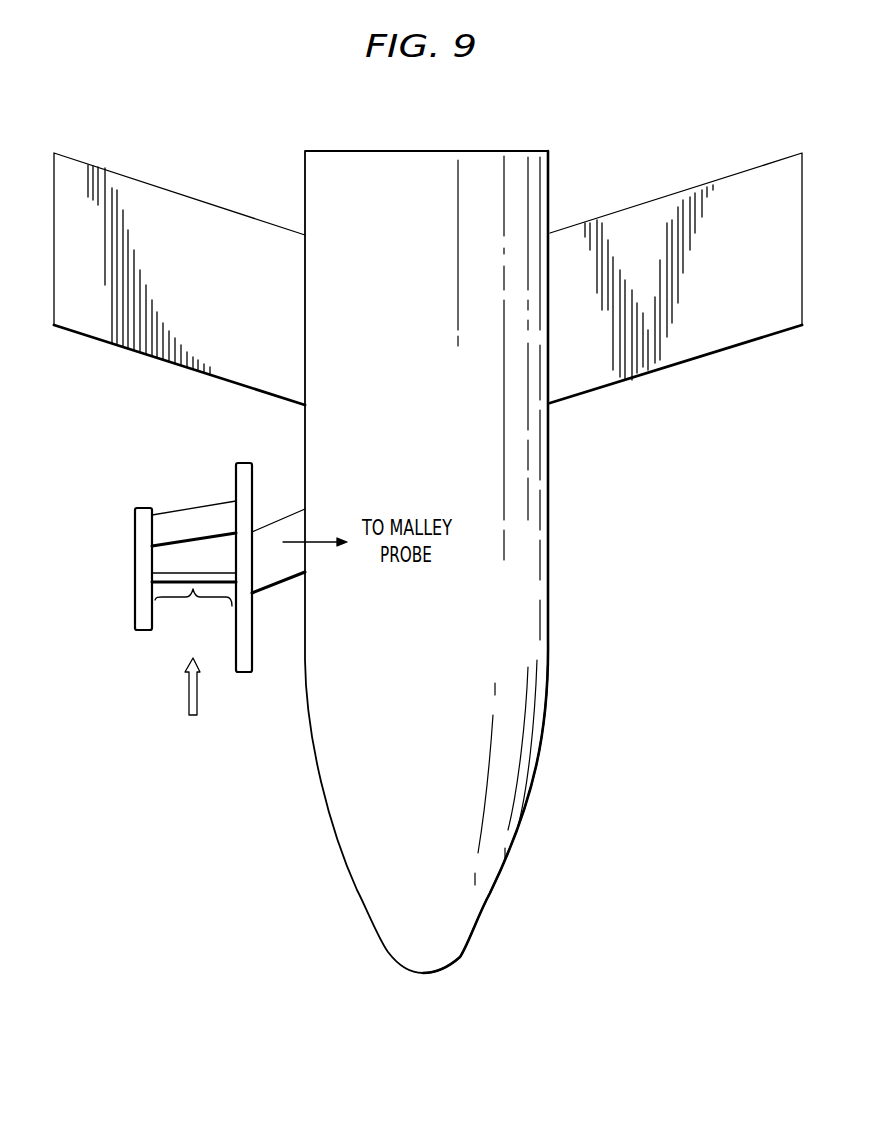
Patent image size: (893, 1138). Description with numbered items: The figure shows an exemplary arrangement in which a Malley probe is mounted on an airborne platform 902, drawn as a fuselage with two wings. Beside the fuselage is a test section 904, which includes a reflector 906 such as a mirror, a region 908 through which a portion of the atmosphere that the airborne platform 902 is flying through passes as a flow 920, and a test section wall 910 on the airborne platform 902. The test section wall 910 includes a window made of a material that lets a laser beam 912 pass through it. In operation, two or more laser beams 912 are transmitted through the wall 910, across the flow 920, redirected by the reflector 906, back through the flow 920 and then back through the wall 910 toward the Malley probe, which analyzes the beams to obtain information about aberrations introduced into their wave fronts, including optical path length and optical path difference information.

The airborne platform 902 is at (721, 192).
The test section 904 is at (147, 465).
The reflector 906 is at (135, 612).
The region 908 is at (192, 583).
The test section wall 910 is at (252, 594).
The laser beam 912 is at (213, 568).
The flow 920 is at (189, 702).